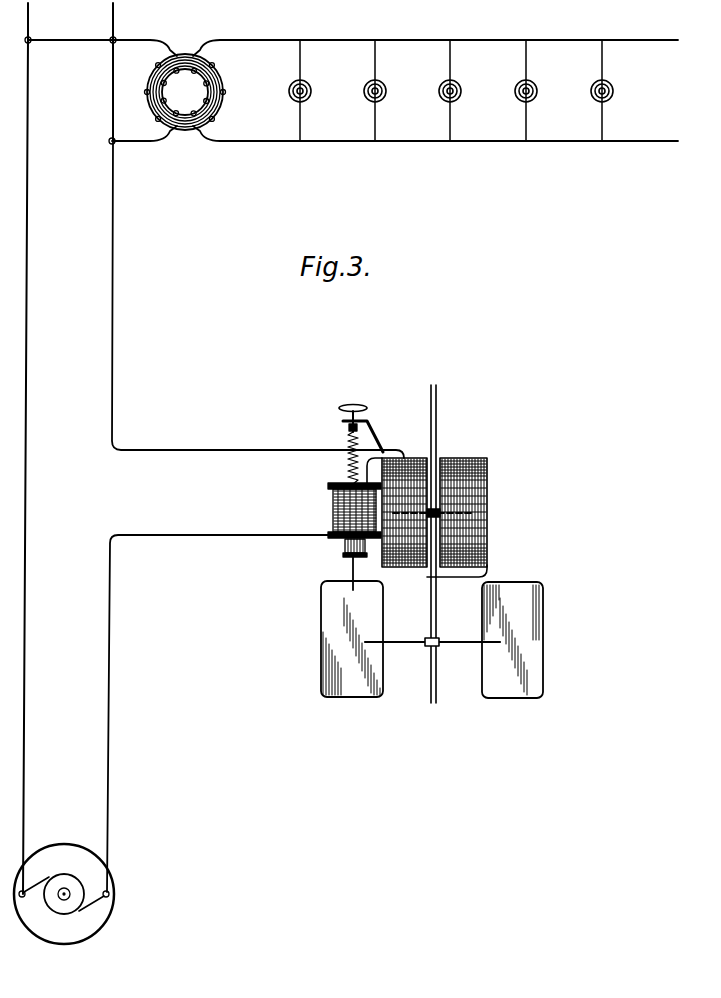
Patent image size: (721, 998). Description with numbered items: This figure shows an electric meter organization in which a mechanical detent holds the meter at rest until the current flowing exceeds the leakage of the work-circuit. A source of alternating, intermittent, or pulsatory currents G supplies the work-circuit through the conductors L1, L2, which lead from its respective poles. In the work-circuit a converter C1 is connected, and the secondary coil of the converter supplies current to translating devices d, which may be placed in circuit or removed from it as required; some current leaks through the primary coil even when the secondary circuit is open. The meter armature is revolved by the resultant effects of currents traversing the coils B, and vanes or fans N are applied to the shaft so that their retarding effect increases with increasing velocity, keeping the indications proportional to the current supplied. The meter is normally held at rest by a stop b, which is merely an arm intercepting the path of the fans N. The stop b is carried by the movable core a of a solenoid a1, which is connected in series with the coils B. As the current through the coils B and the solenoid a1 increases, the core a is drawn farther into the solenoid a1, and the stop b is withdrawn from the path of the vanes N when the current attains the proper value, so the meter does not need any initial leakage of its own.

The converter C1 is at (185, 92).
The translating devices d is at (457, 90).
The coil B is at (437, 517).
The solenoid a1 is at (346, 510).
The movable core a is at (347, 549).
The stop b is at (363, 573).
The vanes or fans N is at (443, 639).
The conductor L1 is at (255, 447).
The conductor L2 is at (33, 448).
The source of electric currents G is at (64, 906).